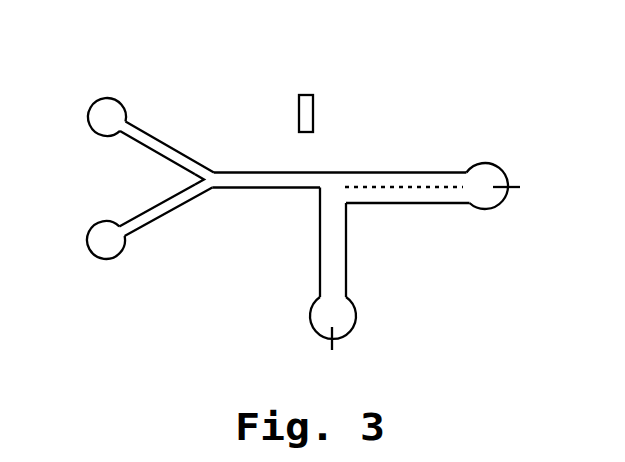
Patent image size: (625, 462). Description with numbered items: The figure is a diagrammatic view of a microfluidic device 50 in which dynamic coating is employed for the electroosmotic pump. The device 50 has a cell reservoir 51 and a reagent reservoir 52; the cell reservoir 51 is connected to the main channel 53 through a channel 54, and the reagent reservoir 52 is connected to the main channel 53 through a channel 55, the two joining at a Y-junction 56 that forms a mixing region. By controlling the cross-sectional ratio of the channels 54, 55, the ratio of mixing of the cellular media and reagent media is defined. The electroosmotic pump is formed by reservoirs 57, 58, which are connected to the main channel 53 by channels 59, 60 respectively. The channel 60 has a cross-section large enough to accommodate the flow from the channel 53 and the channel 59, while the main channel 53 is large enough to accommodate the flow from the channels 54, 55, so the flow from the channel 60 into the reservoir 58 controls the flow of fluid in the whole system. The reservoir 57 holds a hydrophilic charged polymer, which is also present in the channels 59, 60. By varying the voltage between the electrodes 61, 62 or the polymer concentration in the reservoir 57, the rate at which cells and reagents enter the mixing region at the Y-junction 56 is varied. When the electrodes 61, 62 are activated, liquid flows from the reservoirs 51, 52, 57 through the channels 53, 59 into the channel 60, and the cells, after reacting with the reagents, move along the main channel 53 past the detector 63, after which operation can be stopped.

The device 50 is at (514, 102).
The cell reservoir 51 is at (90, 249).
The reagent reservoir 52 is at (91, 107).
The main channel 53 is at (260, 172).
The channel 54 is at (163, 214).
The channel 55 is at (163, 142).
The Y-junction 56 is at (211, 172).
The reservoir 57 is at (315, 330).
The reservoir 58 is at (487, 209).
The channel 59 is at (346, 246).
The channel 60 is at (414, 172).
The electrode 61 is at (334, 350).
The electrode 62 is at (521, 186).
The detector 63 is at (314, 105).